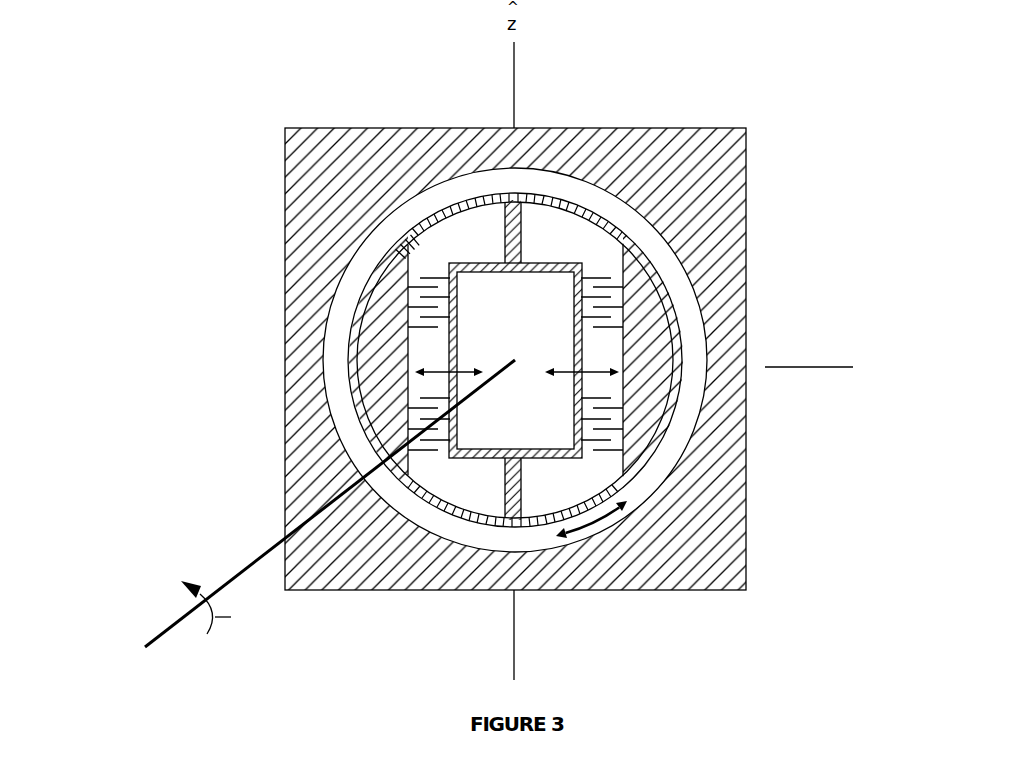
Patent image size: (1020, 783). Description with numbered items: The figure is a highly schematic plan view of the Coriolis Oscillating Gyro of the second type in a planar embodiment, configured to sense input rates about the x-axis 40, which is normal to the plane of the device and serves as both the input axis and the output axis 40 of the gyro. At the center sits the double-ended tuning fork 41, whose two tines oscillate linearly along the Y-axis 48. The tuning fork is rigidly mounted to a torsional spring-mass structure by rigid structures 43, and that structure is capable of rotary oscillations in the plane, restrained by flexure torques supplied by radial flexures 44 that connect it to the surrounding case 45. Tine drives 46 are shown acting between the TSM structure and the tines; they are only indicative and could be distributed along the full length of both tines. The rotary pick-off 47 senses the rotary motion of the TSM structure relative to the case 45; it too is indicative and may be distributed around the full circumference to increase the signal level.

The x-axis 40 is at (291, 543).
The double-ended tuning fork 41 is at (360, 420).
The rigid structures 43 is at (533, 233).
The radial flexures 44 is at (516, 200).
The case 45 is at (752, 525).
The tine drives 46 is at (607, 272).
The rotary pick-off 47 is at (370, 250).
The Y-axis 48 is at (843, 362).